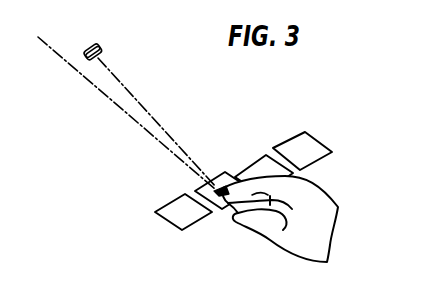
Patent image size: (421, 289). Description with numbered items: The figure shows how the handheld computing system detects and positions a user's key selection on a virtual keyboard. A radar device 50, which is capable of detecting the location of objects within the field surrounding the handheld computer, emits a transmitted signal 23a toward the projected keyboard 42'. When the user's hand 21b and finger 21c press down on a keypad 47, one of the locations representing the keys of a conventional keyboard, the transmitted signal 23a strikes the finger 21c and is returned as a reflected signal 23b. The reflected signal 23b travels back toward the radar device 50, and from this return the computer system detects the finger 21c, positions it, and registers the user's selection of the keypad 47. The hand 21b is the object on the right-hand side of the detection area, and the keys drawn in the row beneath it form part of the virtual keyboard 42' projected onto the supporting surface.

The radar device 50 is at (101, 53).
The transmitted signal 23a is at (83, 74).
The reflected signal 23b is at (134, 96).
The keypad 47 is at (212, 178).
The finger 21c is at (226, 200).
The hand 21b is at (321, 192).
The keyboard keys 42' is at (263, 164).